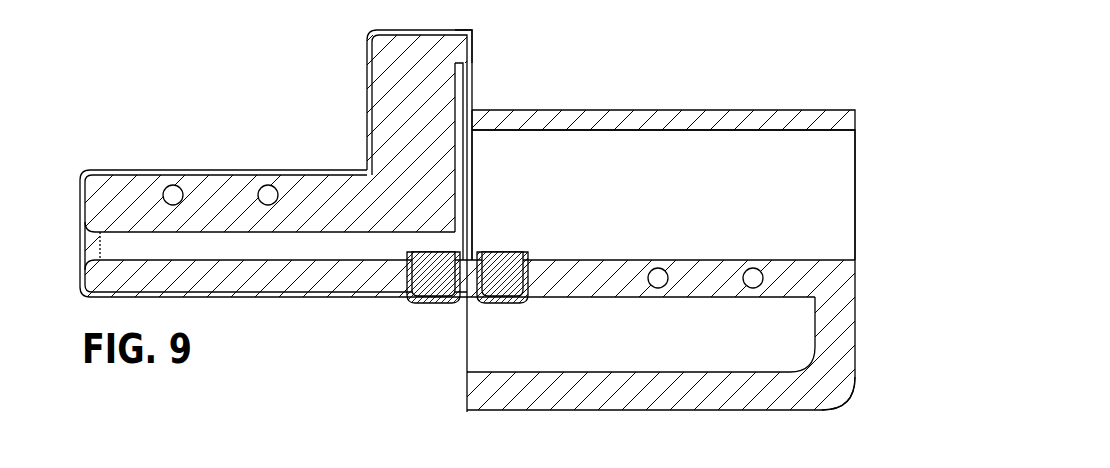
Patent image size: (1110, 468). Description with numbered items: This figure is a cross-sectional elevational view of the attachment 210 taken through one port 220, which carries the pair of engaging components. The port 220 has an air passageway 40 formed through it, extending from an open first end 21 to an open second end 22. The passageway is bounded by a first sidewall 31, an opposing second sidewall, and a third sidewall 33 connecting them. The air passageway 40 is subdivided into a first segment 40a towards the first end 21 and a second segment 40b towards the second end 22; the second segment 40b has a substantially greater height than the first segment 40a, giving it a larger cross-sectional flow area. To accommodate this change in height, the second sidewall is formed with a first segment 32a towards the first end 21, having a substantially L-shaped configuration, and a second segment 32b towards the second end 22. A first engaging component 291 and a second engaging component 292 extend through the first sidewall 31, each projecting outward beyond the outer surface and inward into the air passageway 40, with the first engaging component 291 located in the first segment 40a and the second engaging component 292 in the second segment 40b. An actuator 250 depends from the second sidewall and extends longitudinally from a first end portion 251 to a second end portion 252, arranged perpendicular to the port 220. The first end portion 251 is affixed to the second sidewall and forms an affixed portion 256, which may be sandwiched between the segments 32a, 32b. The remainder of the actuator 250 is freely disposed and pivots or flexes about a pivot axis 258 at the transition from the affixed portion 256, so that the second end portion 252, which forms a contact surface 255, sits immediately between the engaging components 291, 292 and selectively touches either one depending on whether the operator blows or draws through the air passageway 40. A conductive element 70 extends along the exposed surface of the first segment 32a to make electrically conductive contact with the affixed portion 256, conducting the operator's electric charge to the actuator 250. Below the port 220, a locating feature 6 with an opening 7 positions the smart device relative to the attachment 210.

The locating feature 6 is at (835, 410).
The opening 7 is at (484, 357).
The first end 21 is at (430, 203).
The second end 22 is at (664, 247).
The first sidewall 31 is at (278, 282).
The first segment of the second sidewall 32a is at (303, 190).
The second segment of the second sidewall 32b is at (652, 118).
The third sidewall 33 is at (690, 160).
The air passageway 40 is at (120, 245).
The first segment of the air passageway 40a is at (217, 240).
The second segment of the air passageway 40b is at (755, 200).
The conductive element 70 is at (208, 172).
The attachment 210 is at (430, 203).
The port 220 is at (664, 247).
The actuator 250 is at (472, 205).
The first end portion 251 is at (533, 32).
The affixed portion 256 is at (472, 37).
The second end portion 252 is at (417, 336).
The contact surface 255 is at (467, 297).
The pivot axis 258 is at (473, 65).
The first engaging component 291 is at (403, 297).
The second engaging component 292 is at (507, 297).